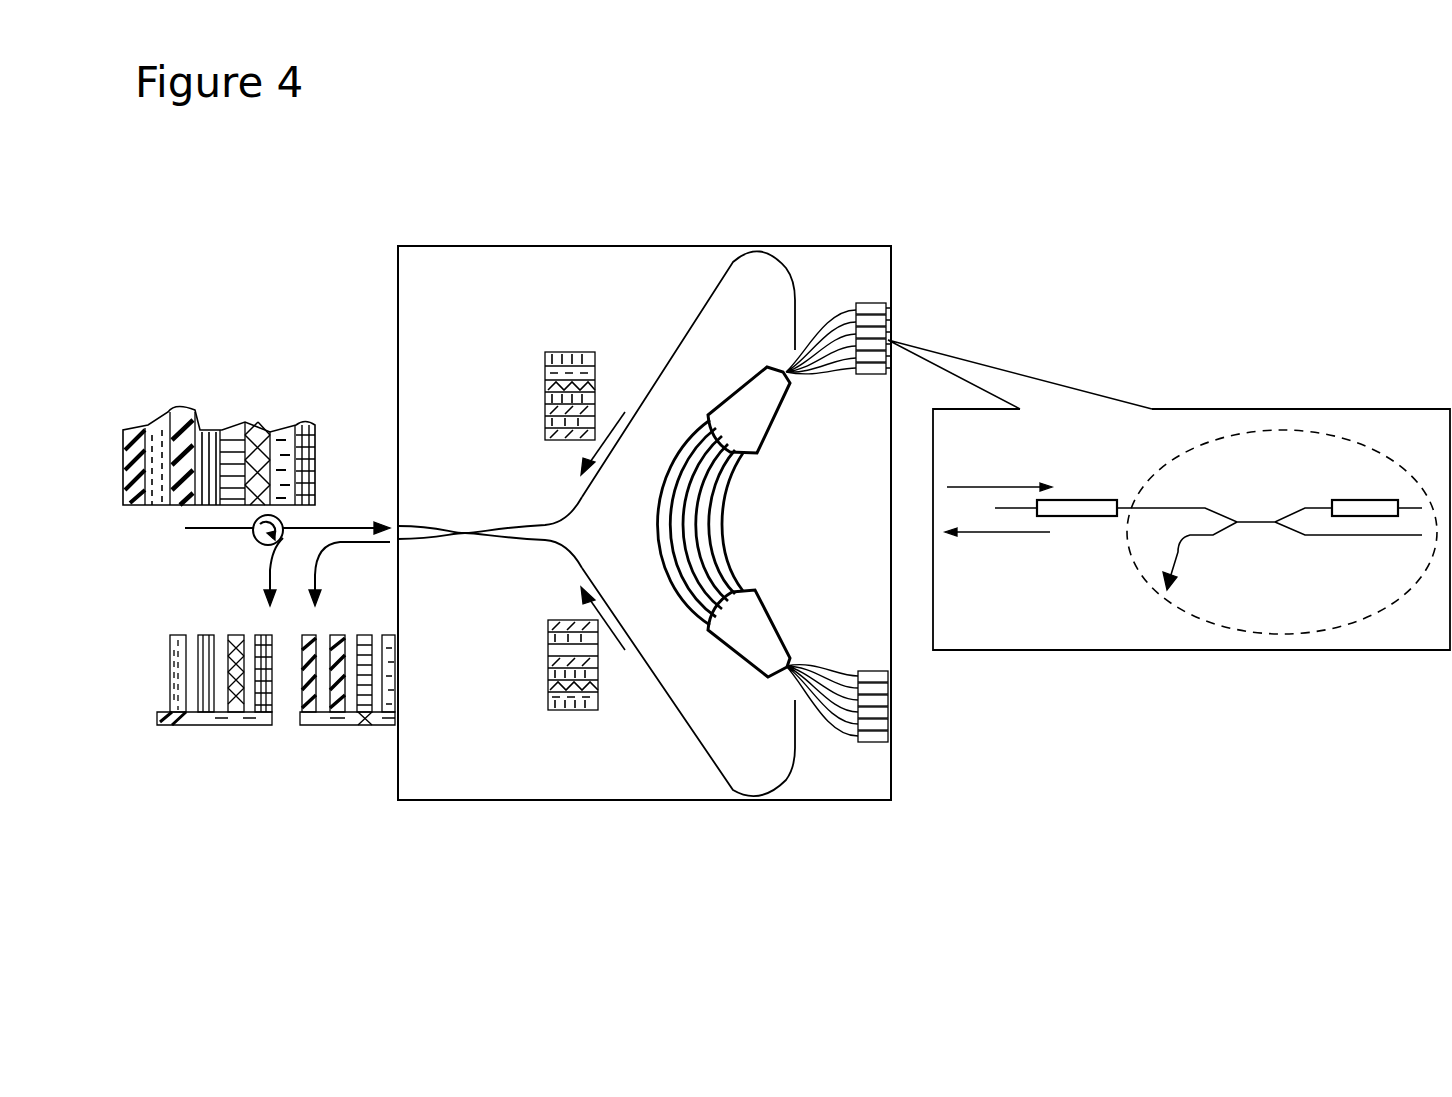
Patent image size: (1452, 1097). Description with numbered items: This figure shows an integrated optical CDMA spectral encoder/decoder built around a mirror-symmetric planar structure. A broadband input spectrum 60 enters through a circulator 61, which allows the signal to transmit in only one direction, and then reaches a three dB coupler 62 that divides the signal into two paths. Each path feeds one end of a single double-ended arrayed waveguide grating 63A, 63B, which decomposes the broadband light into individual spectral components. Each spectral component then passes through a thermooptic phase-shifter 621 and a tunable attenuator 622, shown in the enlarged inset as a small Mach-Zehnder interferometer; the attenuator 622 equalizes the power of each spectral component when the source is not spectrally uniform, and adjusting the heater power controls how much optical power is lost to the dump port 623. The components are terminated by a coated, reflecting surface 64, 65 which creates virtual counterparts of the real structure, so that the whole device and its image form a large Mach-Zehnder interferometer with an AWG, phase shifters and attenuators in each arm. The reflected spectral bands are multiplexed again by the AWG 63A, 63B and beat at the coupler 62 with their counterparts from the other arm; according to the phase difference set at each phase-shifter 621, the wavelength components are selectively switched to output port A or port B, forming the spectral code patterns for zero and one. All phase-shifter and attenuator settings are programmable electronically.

The input wavelength spectrum 60 is at (219, 443).
The circulator 61 is at (256, 545).
The 3 dB coupler 62 is at (465, 528).
The double-ended AWG 63A is at (784, 415).
The double-ended AWG 63B is at (775, 607).
The reflecting surface 64 is at (893, 318).
The reflecting surface 65 is at (898, 698).
The thermooptic phase-shifter 621 is at (1088, 498).
The tunable attenuator 622 is at (1370, 617).
The dump port 623 is at (1180, 573).